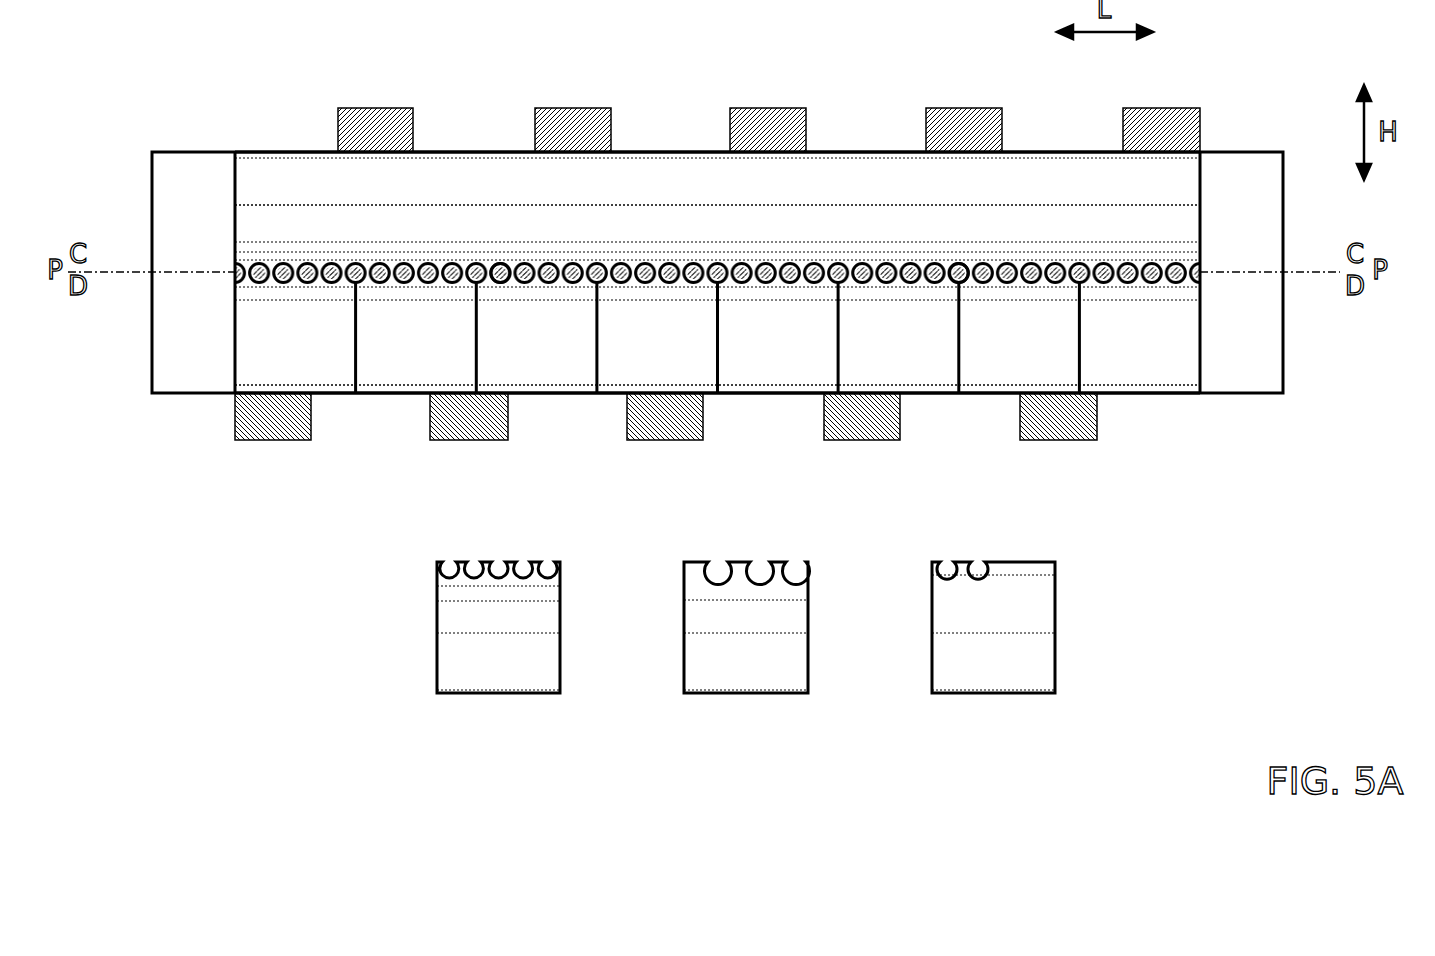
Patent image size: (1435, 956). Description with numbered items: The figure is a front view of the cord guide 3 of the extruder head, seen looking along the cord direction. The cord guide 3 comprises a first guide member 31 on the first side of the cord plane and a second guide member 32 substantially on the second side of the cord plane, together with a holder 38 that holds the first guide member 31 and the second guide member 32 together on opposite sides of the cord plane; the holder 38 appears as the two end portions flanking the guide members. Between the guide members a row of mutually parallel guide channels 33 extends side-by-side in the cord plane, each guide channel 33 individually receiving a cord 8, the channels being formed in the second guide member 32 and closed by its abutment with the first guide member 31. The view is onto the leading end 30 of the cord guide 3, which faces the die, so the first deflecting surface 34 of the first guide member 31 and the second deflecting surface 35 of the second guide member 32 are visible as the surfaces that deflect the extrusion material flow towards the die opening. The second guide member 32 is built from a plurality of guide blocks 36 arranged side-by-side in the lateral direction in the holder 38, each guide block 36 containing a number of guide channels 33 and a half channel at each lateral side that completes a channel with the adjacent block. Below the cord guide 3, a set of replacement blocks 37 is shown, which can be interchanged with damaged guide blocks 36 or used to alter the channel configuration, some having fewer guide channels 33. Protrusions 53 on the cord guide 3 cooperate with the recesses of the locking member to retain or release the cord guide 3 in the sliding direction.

The cord guide 3 is at (183, 150).
The cord 8 is at (503, 262).
The leading end 30 is at (962, 262).
The first guide member 31 is at (843, 183).
The second guide member 32 is at (914, 372).
The guide channel 33 is at (548, 262).
The first deflecting surface 34 is at (309, 168).
The second deflecting surface 35 is at (417, 370).
The guide block 36 is at (551, 372).
The replacement block 37 is at (1073, 726).
The holder 38 is at (160, 387).
The protrusion 53 is at (386, 118).